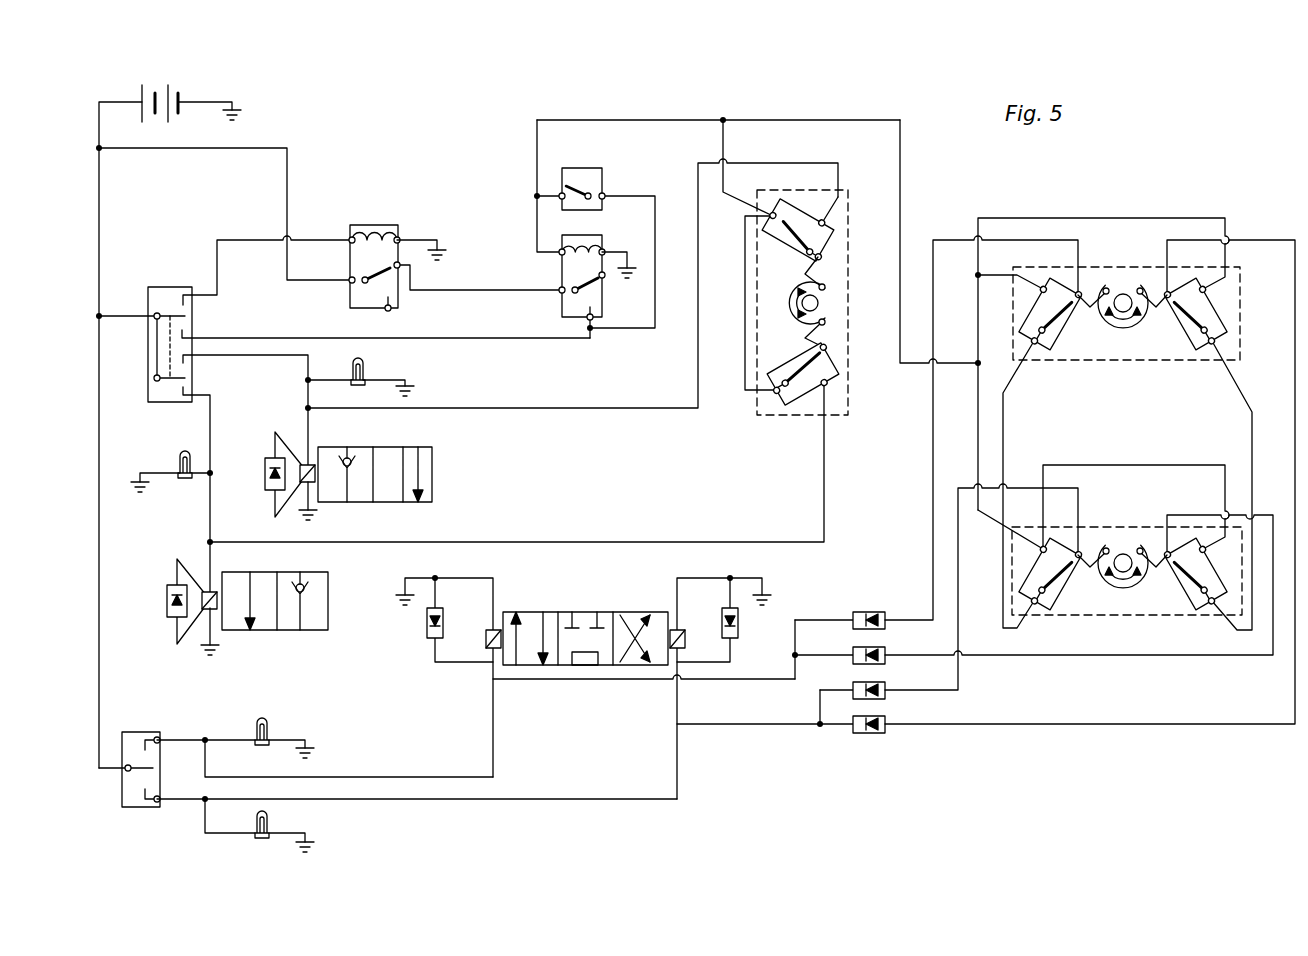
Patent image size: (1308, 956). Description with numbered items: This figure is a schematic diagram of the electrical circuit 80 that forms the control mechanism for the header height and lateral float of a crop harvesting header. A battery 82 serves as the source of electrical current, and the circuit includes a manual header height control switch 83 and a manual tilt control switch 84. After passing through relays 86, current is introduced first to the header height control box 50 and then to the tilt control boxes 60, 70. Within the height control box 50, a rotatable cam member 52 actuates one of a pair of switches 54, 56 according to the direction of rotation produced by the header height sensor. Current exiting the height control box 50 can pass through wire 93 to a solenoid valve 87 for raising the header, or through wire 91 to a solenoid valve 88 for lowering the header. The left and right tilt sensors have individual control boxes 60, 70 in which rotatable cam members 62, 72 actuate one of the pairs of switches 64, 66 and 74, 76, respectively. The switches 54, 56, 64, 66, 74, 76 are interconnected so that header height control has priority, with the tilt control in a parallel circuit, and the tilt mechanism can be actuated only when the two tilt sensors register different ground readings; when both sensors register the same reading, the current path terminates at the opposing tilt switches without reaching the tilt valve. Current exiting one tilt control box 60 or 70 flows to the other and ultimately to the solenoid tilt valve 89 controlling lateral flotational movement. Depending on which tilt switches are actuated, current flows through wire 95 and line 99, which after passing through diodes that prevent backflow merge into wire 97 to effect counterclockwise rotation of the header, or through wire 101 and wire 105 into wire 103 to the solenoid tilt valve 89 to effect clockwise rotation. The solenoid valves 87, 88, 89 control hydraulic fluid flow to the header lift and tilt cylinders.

The control box 50 is at (797, 291).
The cam member 52 is at (832, 303).
The switch 54 is at (833, 230).
The switch 56 is at (832, 369).
The control box 60 is at (1110, 558).
The cam member 62 is at (1127, 586).
The switch 64 is at (1047, 600).
The switch 66 is at (1200, 604).
The control box 70 is at (1115, 399).
The cam member 72 is at (1127, 328).
The switch 74 is at (1047, 353).
The switch 76 is at (1196, 353).
The electrical circuit 80 is at (479, 130).
The battery 82 is at (140, 95).
The manual header height control switch 83 is at (168, 290).
The manual tilt control switch 84 is at (148, 732).
The relays 86 is at (377, 224).
The solenoid valve 87 is at (432, 470).
The solenoid valve 88 is at (330, 588).
The solenoid tilt valve 89 is at (600, 583).
The wire 91 is at (797, 545).
The wire 93 is at (553, 408).
The wire 95 is at (1127, 655).
The wire 97 is at (723, 681).
The line 99 is at (933, 458).
The wire 101 is at (1087, 726).
The wire 103 is at (732, 726).
The wire 105 is at (958, 673).